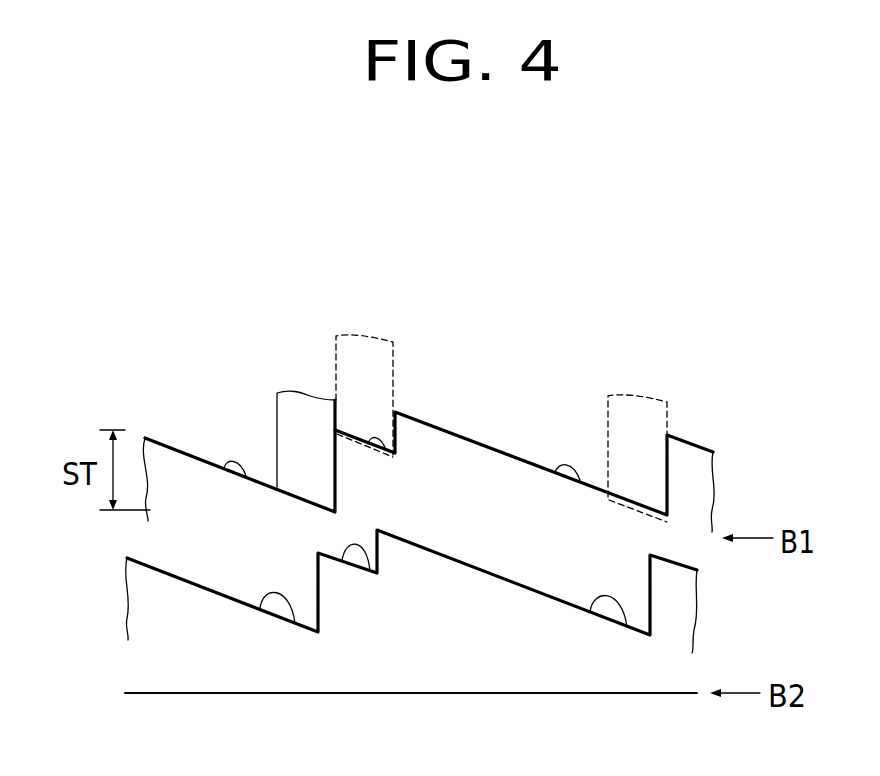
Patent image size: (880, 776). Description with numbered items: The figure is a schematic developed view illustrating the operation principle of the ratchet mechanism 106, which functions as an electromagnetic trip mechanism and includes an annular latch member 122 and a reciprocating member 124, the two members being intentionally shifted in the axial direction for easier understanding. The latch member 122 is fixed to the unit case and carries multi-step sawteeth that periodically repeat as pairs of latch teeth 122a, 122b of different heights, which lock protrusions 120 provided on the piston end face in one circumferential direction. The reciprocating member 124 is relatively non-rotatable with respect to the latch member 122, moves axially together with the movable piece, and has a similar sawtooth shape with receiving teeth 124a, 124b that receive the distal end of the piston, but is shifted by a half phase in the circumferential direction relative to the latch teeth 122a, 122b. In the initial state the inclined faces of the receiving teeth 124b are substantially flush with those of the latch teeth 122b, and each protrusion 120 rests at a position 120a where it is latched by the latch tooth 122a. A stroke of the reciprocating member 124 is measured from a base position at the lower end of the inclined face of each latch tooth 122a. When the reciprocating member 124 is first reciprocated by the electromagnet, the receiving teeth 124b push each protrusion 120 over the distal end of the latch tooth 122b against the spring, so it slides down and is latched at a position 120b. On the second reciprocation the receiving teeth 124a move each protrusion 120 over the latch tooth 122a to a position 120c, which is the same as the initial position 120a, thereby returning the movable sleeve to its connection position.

The ratchet mechanism 106 is at (806, 410).
The protrusion 120 is at (283, 448).
The position 120a is at (303, 410).
The position 120b is at (368, 357).
The position 120c is at (633, 412).
The latch member 122 is at (173, 465).
The latch tooth 122a is at (246, 476).
The latch tooth 122b is at (386, 450).
The reciprocating member 124 is at (140, 617).
The receiving tooth 124a is at (295, 623).
The receiving tooth 124b is at (370, 571).